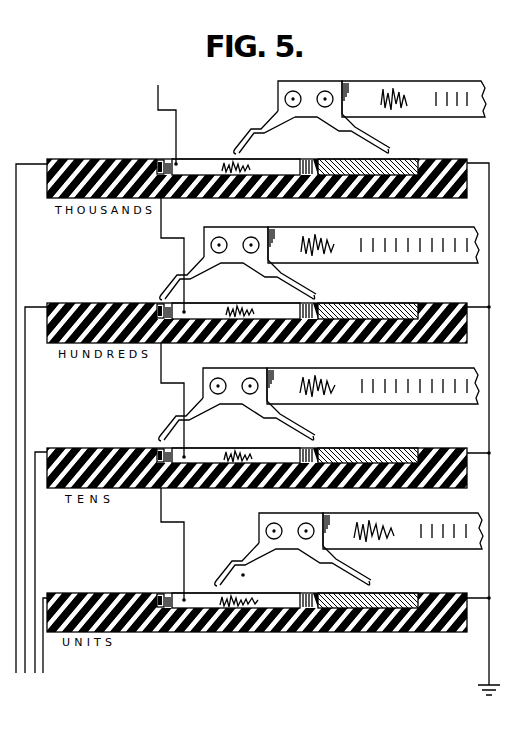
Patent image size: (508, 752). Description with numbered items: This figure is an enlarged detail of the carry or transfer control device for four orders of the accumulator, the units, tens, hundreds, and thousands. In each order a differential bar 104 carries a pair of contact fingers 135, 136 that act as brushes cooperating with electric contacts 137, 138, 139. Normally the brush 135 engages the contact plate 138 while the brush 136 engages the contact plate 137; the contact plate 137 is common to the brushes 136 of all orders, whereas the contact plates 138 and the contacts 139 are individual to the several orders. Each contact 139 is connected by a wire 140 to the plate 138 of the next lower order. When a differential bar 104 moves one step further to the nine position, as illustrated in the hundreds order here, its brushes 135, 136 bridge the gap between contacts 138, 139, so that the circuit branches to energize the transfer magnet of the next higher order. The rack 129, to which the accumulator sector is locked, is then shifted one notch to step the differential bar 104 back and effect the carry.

The differential bar 104 is at (387, 88).
The rack 129 is at (25, 362).
The contact finger 135 is at (243, 142).
The contact finger 136 is at (374, 140).
The contact plate 137 is at (411, 160).
The contact plate 138 is at (268, 165).
The contact 139 is at (169, 160).
The wire 140 is at (178, 523).